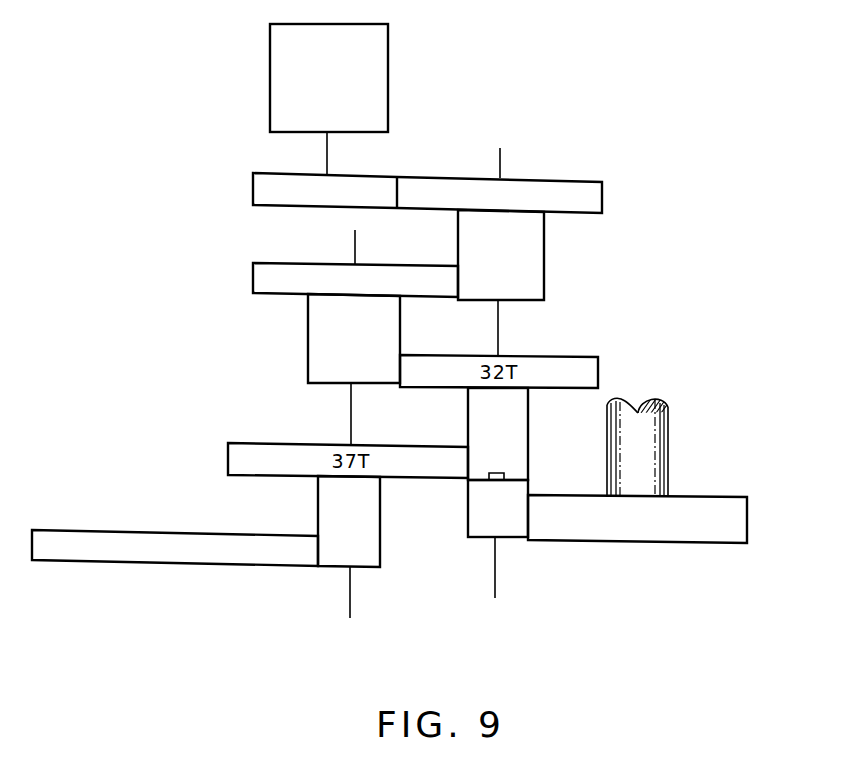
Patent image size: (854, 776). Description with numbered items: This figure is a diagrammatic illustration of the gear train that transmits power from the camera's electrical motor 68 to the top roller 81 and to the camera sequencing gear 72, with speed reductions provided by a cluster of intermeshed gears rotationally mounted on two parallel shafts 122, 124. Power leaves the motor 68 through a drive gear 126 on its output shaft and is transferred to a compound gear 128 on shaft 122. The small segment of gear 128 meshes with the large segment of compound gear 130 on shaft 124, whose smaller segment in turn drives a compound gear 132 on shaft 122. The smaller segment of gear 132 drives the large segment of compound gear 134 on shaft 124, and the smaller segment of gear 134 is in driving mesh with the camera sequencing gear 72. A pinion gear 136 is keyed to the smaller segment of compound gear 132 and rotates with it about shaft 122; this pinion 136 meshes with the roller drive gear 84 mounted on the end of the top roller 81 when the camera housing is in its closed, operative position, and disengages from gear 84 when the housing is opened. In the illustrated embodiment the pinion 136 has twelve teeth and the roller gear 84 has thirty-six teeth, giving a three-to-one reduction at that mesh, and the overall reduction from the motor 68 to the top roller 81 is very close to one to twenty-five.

The electrical motor 68 is at (388, 70).
The drive gear 126 is at (361, 175).
The compound gear 128 is at (557, 227).
The compound gear 130 is at (294, 306).
The compound gear 132 is at (543, 405).
The compound gear 134 is at (305, 485).
The pinion gear 136 is at (478, 539).
The camera sequencing gear 72 is at (228, 557).
The shaft 124 is at (351, 596).
The shaft 122 is at (497, 570).
The roller drive gear 84 is at (724, 535).
The roller 81 is at (669, 440).